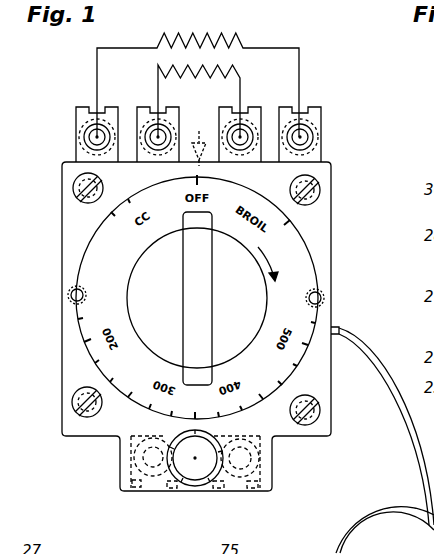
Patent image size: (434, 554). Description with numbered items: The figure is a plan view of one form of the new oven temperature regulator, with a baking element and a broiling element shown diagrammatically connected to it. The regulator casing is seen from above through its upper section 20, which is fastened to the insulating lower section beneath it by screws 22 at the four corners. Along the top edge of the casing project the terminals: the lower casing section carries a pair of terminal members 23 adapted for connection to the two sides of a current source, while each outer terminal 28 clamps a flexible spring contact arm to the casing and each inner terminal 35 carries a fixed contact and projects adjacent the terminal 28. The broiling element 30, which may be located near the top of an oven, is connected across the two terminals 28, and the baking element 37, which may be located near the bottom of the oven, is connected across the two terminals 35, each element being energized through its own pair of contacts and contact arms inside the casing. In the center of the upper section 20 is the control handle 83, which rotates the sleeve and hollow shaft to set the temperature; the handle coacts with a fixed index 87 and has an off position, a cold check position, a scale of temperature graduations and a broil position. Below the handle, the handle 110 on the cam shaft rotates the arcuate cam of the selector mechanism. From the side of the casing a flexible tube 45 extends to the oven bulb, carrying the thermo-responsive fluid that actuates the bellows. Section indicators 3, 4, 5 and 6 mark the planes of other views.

The upper section 20 is at (317, 242).
The screws 22 is at (320, 192).
The terminal members 23 is at (133, 465).
The terminal 28 is at (74, 112).
The terminal 35 is at (141, 110).
The broiling element 30 is at (175, 31).
The baking element 37 is at (158, 65).
The control handle 83 is at (137, 280).
The fixed index 87 is at (198, 139).
The handle 110 is at (177, 435).
The flexible tube 45 is at (405, 413).
The section line 3 is at (193, 95).
The section line 4 is at (179, 545).
The section line 5 is at (236, 96).
The section line 6 is at (295, 96).